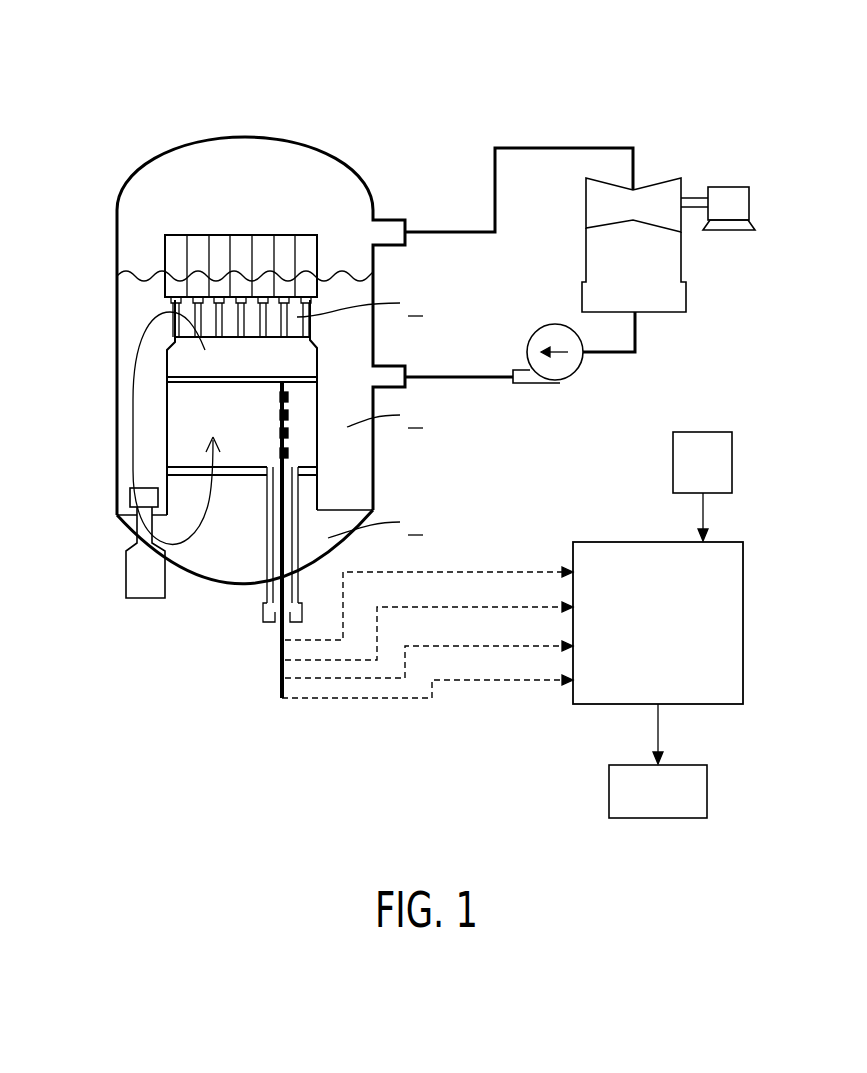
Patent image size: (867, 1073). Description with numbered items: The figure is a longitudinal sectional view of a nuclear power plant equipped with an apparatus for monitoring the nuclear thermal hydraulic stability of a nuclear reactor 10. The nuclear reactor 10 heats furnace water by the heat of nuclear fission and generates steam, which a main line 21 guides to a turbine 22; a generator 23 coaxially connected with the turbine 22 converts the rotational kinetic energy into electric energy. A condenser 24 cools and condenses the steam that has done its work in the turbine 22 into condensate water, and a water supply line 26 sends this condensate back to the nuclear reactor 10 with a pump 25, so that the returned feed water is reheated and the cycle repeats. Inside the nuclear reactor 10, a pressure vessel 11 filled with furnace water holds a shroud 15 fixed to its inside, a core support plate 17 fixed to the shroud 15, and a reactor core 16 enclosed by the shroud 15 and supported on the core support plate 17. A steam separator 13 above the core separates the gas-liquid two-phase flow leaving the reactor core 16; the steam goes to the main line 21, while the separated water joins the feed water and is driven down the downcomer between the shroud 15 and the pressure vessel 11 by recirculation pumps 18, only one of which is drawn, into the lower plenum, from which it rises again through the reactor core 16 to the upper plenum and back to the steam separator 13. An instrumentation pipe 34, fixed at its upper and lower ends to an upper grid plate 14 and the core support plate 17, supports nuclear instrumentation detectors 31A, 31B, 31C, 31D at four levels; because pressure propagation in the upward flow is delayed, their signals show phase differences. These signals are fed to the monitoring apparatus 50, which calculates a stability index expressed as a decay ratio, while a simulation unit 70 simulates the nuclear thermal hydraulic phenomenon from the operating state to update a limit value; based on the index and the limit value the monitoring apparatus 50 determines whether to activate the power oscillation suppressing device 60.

The nuclear reactor 10 is at (173, 97).
The pressure vessel 11 is at (130, 188).
The steam separator 13 is at (165, 255).
The upper grid plate 14 is at (195, 378).
The shroud 15 is at (167, 423).
The reactor core 16 is at (197, 435).
The core support plate 17 is at (192, 470).
The recirculation pump 18 is at (133, 578).
The main line 21 is at (558, 148).
The turbine 22 is at (660, 178).
The generator 23 is at (727, 187).
The condenser 24 is at (686, 282).
The pump 25 is at (563, 383).
The water supply line 26 is at (468, 375).
The nuclear instrumentation detector 31A is at (280, 452).
The nuclear instrumentation detector 31B is at (280, 432).
The nuclear instrumentation detector 31C is at (280, 414).
The nuclear instrumentation detector 31D is at (280, 396).
The instrumentation pipe 34 is at (283, 440).
The nuclear thermal hydraulic stability monitoring apparatus 50 is at (625, 542).
The power oscillation suppressing device 60 is at (609, 790).
The simulation unit 70 is at (703, 432).